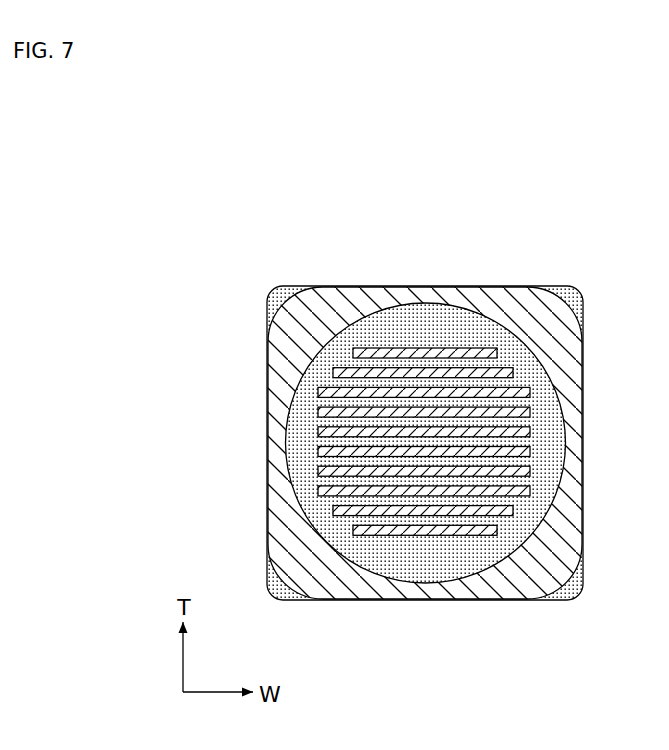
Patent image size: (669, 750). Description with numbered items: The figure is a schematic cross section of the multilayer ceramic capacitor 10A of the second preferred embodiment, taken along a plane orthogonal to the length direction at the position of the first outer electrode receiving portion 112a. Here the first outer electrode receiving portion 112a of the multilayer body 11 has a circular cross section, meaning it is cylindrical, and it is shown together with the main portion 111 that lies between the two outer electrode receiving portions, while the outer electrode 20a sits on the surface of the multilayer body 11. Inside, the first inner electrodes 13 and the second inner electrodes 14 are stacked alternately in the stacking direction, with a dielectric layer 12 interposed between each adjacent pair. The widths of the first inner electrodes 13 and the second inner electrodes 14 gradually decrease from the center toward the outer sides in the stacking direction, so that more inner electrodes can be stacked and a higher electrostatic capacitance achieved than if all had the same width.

The multilayer ceramic capacitor 10A is at (252, 232).
The multilayer body 11 is at (445, 211).
The main portion 111 is at (562, 288).
The first outer electrode receiving portion 112a is at (463, 305).
The outer electrode 20a is at (277, 442).
The dielectric layer 12 is at (416, 357).
The first inner electrode 13 is at (378, 340).
The second inner electrode 14 is at (445, 537).